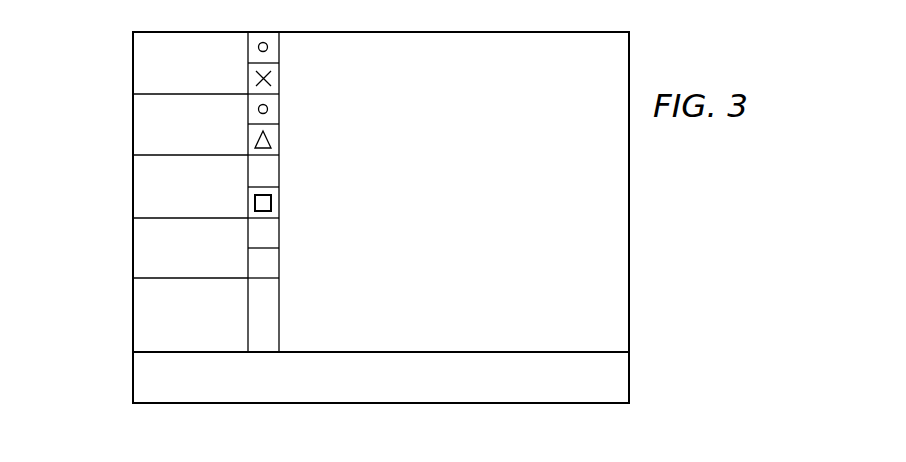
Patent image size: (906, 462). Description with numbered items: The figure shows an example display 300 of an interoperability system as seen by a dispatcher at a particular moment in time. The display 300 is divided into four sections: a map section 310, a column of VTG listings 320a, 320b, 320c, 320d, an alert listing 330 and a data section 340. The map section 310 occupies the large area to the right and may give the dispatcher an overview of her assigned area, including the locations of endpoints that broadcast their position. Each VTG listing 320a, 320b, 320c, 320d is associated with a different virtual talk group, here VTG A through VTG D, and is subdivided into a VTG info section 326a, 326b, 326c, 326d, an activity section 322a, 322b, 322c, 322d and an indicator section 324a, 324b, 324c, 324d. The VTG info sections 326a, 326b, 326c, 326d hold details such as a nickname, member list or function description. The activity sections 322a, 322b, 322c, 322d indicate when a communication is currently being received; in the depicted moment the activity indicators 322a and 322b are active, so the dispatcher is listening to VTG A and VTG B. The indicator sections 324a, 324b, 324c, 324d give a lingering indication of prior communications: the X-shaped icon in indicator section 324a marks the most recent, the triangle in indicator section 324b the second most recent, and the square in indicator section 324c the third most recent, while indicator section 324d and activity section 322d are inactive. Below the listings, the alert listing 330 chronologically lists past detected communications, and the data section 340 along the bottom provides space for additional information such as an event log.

The display 300 is at (651, 278).
The map section 310 is at (472, 224).
The VTG listing 320a is at (128, 32).
The VTG listing 320b is at (128, 95).
The VTG listing 320c is at (128, 156).
The VTG listing 320d is at (128, 219).
The activity section 322a is at (279, 45).
The activity section 322b is at (279, 106).
The activity section 322c is at (279, 168).
The activity section 322d is at (279, 230).
The indicator section 324a is at (279, 75).
The indicator section 324b is at (279, 136).
The indicator section 324c is at (279, 200).
The indicator section 324d is at (279, 261).
The VTG info section 326a is at (215, 74).
The VTG info section 326b is at (215, 135).
The VTG info section 326c is at (215, 198).
The VTG info section 326d is at (215, 260).
The alert listing 330 is at (132, 318).
The data section 340 is at (132, 378).